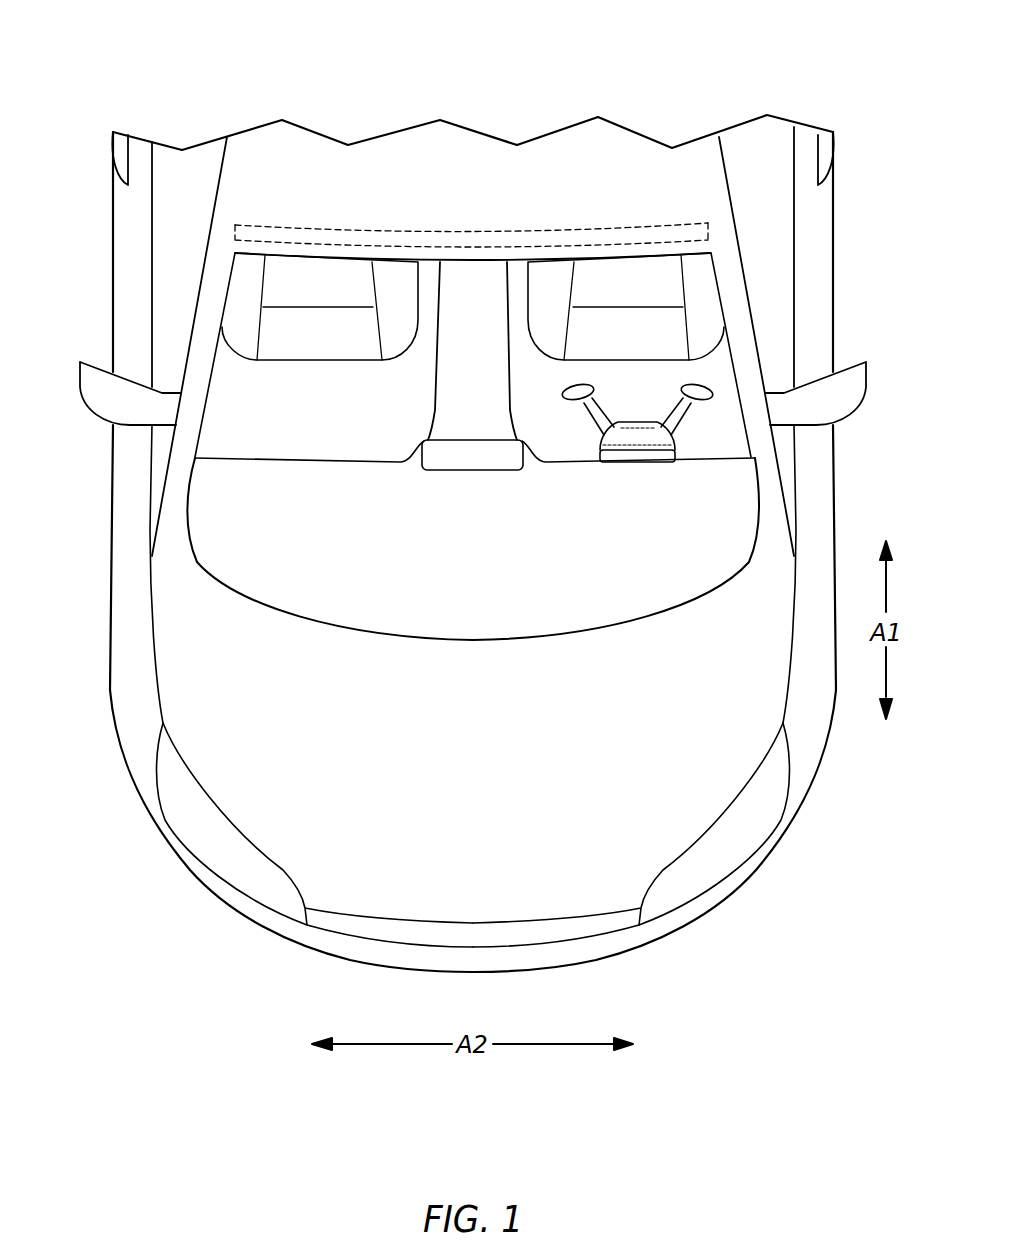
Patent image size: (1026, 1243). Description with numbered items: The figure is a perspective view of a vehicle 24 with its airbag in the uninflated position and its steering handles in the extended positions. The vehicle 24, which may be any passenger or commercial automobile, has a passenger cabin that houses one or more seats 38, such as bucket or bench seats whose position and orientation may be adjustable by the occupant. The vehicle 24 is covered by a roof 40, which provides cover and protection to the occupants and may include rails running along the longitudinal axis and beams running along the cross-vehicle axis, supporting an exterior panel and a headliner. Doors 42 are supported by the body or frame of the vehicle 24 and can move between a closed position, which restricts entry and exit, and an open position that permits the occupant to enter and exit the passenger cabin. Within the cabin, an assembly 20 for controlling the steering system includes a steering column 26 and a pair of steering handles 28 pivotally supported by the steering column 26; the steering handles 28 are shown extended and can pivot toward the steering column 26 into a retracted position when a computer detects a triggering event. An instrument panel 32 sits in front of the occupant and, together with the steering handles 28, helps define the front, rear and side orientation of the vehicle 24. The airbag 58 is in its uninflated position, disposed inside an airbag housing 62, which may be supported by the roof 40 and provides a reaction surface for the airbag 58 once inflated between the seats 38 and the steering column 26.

The assembly 20 is at (720, 440).
The vehicle 24 is at (67, 218).
The steering column 26 is at (606, 457).
The steering handles 28 is at (686, 447).
The instrument panel 32 is at (628, 517).
The seats 38 is at (307, 343).
The roof 40 is at (618, 153).
The doors 42 is at (817, 240).
The airbag 58 is at (415, 229).
The airbag housing 62 is at (507, 229).